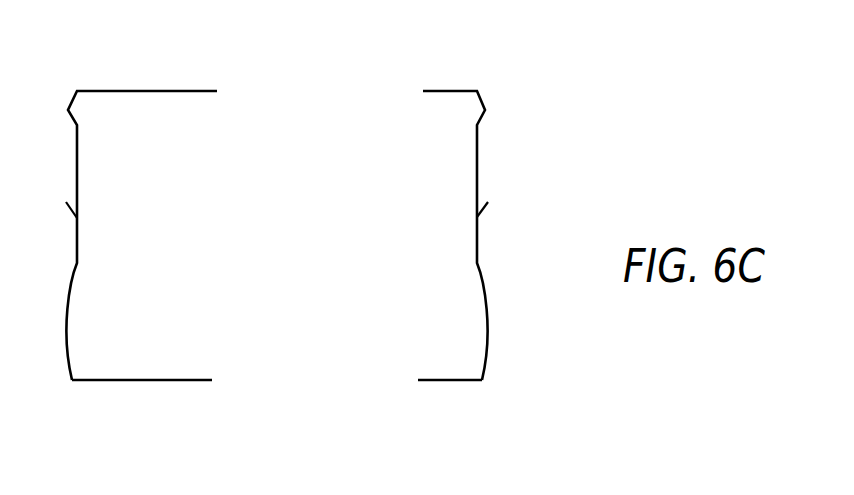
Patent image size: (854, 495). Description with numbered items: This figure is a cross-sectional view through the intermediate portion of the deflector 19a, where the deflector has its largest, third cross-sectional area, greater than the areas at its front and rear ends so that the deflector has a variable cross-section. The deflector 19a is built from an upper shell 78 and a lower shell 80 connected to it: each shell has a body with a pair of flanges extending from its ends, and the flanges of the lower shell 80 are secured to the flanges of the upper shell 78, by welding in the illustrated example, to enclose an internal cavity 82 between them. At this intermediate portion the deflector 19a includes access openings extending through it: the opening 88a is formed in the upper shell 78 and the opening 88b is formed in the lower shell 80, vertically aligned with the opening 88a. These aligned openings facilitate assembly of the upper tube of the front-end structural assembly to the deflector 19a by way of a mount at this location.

The access opening 88a is at (375, 92).
The access opening 88b is at (272, 370).
The upper shell 78 is at (480, 150).
The deflector 19a is at (495, 177).
The internal cavity 82 is at (153, 353).
The lower shell 80 is at (468, 382).